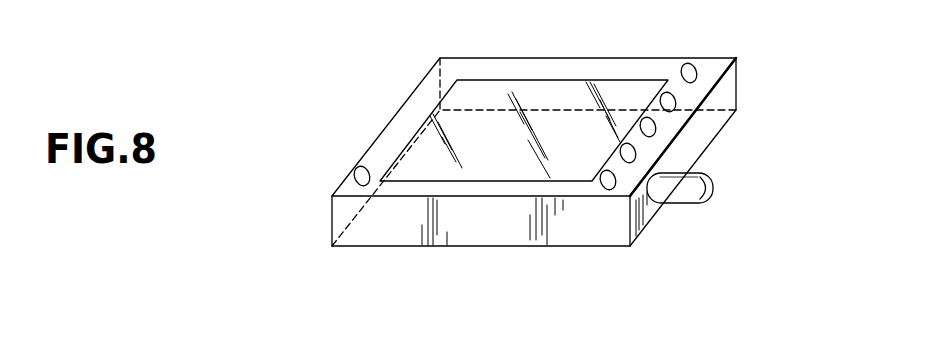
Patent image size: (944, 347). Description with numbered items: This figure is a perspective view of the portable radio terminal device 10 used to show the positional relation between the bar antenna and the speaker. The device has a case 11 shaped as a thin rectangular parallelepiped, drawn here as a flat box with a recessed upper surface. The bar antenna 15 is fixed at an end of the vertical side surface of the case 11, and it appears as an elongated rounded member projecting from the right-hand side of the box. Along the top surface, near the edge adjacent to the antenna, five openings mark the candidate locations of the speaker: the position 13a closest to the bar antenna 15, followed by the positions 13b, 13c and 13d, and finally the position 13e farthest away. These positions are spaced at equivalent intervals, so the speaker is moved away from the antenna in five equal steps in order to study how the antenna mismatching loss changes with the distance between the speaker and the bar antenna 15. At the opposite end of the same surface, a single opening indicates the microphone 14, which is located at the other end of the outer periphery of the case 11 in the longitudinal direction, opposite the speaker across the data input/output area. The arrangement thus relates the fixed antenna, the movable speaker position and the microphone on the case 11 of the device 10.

The portable radio terminal device 10 is at (570, 57).
The case 11 is at (387, 238).
The speaker position 13a is at (602, 190).
The speaker position 13b is at (636, 153).
The speaker position 13c is at (650, 127).
The speaker position 13d is at (676, 101).
The speaker position 13e is at (692, 58).
The microphone 14 is at (356, 172).
The bar antenna 15 is at (688, 205).